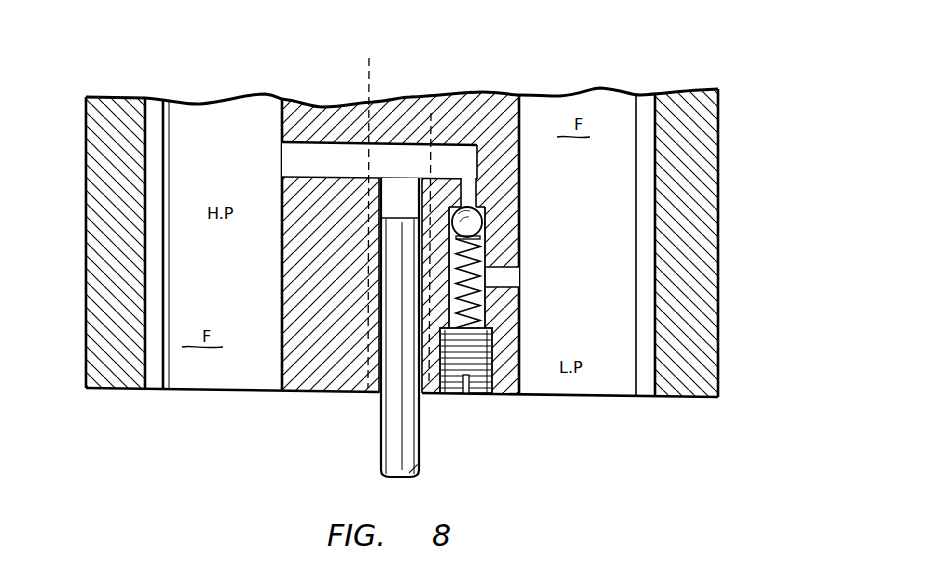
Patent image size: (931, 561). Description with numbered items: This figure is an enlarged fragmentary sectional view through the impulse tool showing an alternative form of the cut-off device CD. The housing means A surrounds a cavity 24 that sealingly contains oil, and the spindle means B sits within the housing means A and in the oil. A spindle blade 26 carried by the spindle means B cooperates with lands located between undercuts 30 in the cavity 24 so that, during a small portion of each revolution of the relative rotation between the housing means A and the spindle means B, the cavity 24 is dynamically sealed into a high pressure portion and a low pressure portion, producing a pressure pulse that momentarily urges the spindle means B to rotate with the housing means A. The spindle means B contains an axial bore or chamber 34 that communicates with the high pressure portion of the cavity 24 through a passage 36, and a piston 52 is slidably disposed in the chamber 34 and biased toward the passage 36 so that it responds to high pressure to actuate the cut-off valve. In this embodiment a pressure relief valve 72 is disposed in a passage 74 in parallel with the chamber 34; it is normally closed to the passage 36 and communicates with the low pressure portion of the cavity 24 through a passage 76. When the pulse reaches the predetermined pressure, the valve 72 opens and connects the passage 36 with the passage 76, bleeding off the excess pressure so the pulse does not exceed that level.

The cavity 24 is at (633, 306).
The spindle blade 26 is at (395, 209).
The undercuts 30 is at (152, 143).
The chamber 34 is at (404, 197).
The passage 36 is at (457, 157).
The piston 52 is at (390, 442).
The pressure relief valve 72 is at (486, 244).
The passage 74 is at (478, 310).
The passage 76 is at (512, 277).
The housing means A is at (722, 204).
The spindle means B is at (333, 101).
The cut-off device CD is at (487, 408).